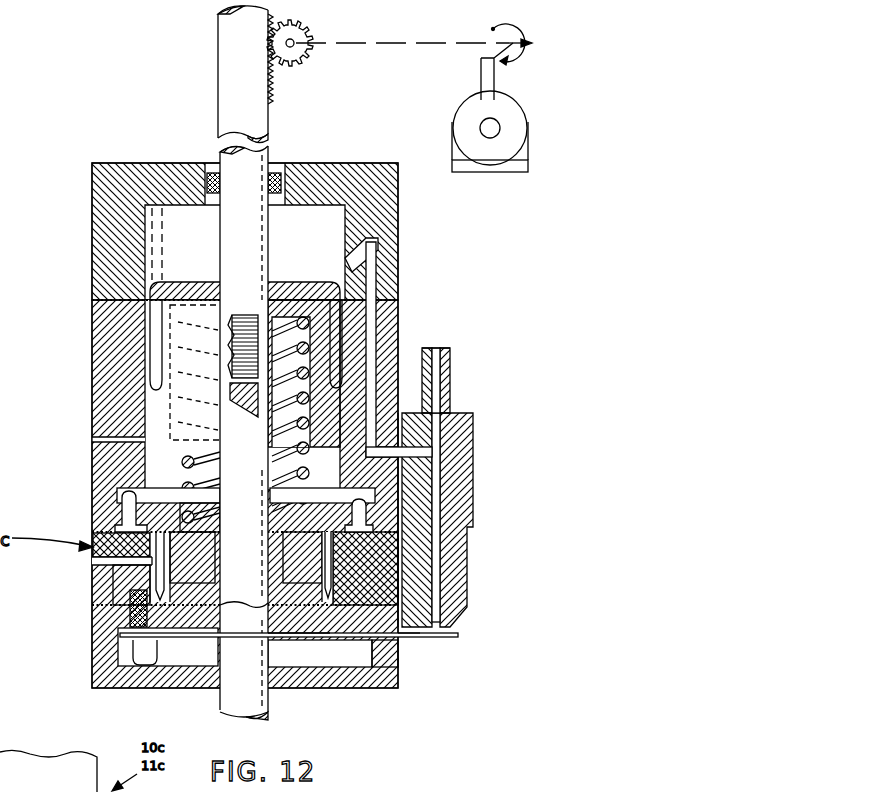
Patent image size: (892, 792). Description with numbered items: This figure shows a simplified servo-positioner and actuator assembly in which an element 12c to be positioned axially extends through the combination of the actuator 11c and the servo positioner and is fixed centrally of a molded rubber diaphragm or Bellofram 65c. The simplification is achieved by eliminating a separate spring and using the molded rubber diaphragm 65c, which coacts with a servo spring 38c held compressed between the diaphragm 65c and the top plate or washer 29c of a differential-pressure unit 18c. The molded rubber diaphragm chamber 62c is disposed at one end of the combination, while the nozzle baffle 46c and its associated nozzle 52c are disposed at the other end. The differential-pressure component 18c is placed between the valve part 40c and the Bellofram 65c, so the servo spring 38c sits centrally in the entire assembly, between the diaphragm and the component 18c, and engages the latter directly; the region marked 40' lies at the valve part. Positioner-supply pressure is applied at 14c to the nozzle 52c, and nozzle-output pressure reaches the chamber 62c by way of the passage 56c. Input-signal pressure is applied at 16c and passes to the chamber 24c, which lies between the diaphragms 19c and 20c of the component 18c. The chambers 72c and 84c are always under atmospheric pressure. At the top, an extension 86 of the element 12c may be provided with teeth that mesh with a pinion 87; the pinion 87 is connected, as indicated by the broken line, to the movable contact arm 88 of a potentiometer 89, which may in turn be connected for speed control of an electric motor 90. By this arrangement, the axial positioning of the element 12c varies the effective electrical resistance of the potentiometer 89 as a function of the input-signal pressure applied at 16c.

The extension 86 is at (234, 80).
The pinion 87 is at (300, 60).
The movable contact arm 88 is at (490, 48).
The potentiometer 89 is at (527, 58).
The electric motor 90 is at (521, 128).
The molded rubber diaphragm chamber 62c is at (142, 232).
The element to be positioned 12c is at (253, 243).
The actuator 11c is at (88, 332).
The passage 56c is at (376, 330).
The positioner-supply pressure inlet 14c is at (436, 350).
The nozzle 52c is at (469, 430).
The molded rubber diaphragm 65c is at (150, 392).
The servo spring 38c is at (185, 414).
The chamber 72c is at (200, 503).
The differential-pressure unit 18c is at (120, 491).
The diaphragm 19c is at (150, 497).
The chamber 24c is at (147, 540).
The input-signal pressure inlet 16c is at (115, 563).
The top plate or washer 29c is at (318, 518).
The diaphragm 20c is at (327, 606).
The rod portion 40' is at (303, 648).
The nozzle baffle 46c is at (450, 640).
The valve part 40c is at (410, 642).
The chamber 84c is at (165, 632).